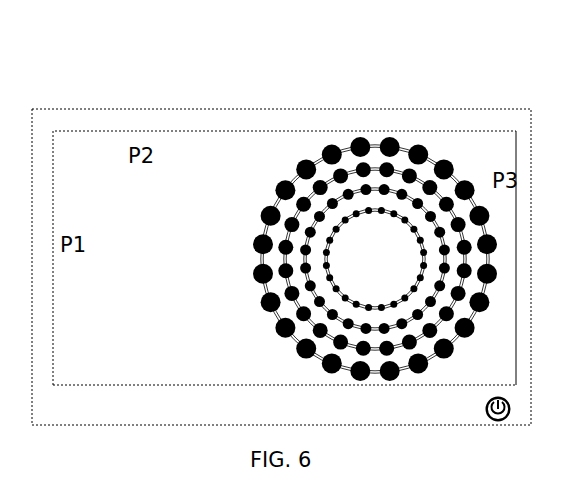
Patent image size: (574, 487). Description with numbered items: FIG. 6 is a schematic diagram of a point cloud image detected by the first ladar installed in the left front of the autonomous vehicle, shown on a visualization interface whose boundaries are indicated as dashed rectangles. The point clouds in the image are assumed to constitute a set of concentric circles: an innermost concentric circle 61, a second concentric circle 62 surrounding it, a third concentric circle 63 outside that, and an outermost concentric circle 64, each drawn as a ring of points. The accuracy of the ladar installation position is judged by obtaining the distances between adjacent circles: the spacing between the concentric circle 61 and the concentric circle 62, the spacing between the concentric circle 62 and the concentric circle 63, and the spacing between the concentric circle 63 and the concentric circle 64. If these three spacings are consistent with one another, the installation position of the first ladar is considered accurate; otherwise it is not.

The concentric circle 61 is at (323, 262).
The concentric circle 62 is at (317, 227).
The concentric circle 63 is at (285, 283).
The concentric circle 64 is at (288, 337).